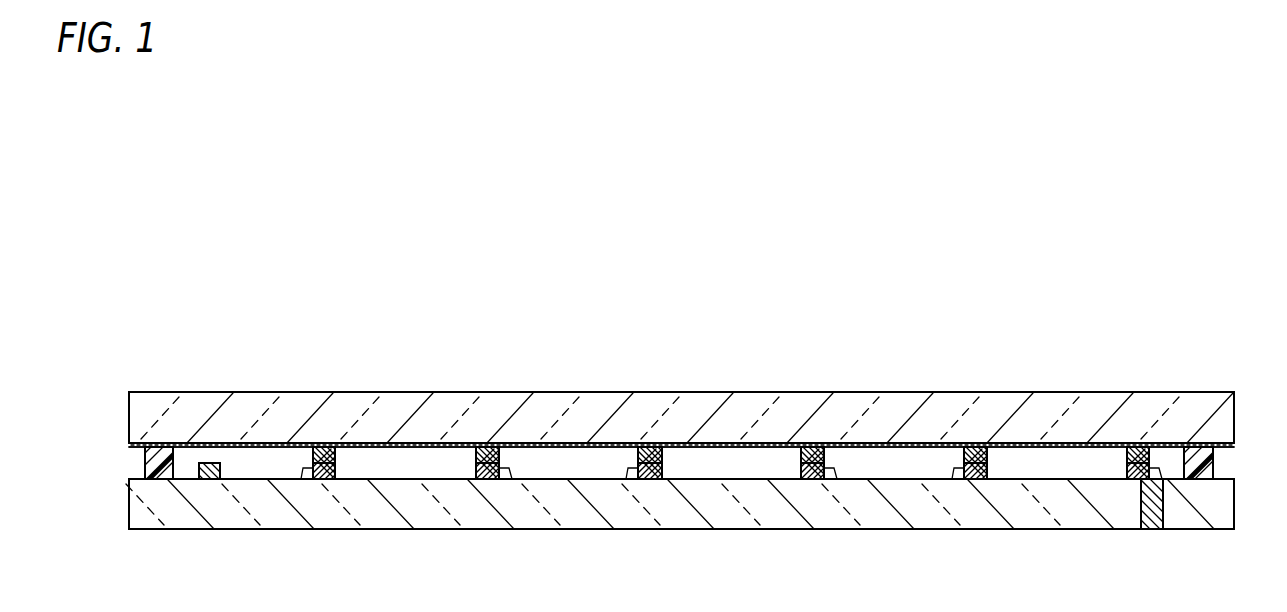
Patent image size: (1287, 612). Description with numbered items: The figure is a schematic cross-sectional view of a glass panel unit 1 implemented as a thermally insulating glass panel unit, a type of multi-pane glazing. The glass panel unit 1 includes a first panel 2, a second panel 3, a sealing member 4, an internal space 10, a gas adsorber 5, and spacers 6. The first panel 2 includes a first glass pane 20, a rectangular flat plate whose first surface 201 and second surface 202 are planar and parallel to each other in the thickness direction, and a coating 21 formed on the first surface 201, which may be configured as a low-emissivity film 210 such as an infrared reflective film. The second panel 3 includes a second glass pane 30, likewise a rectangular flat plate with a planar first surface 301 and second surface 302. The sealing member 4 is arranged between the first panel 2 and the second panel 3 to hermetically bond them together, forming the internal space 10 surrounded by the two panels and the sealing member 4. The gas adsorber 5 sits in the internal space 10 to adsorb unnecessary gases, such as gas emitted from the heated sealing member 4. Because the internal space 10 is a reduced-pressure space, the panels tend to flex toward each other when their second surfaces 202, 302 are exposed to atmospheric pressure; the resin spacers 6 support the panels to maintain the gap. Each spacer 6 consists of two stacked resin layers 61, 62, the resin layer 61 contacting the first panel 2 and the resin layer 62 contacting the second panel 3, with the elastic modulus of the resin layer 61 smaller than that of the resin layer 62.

The glass panel unit 1 is at (146, 369).
The first panel 2 is at (1230, 402).
The first glass pane 20 is at (891, 400).
The first surface 201 is at (254, 457).
The second surface 202 is at (296, 392).
The coating 21 is at (751, 445).
The low-emissivity film 210 is at (638, 445).
The second panel 3 is at (1228, 512).
The second glass pane 30 is at (885, 512).
The first surface 301 is at (710, 468).
The second surface 302 is at (580, 529).
The sealing member 4 is at (145, 465).
The gas adsorber 5 is at (212, 480).
The spacers 6 is at (306, 469).
The resin layer 61 is at (331, 447).
The resin layer 62 is at (330, 470).
The internal space 10 is at (413, 465).